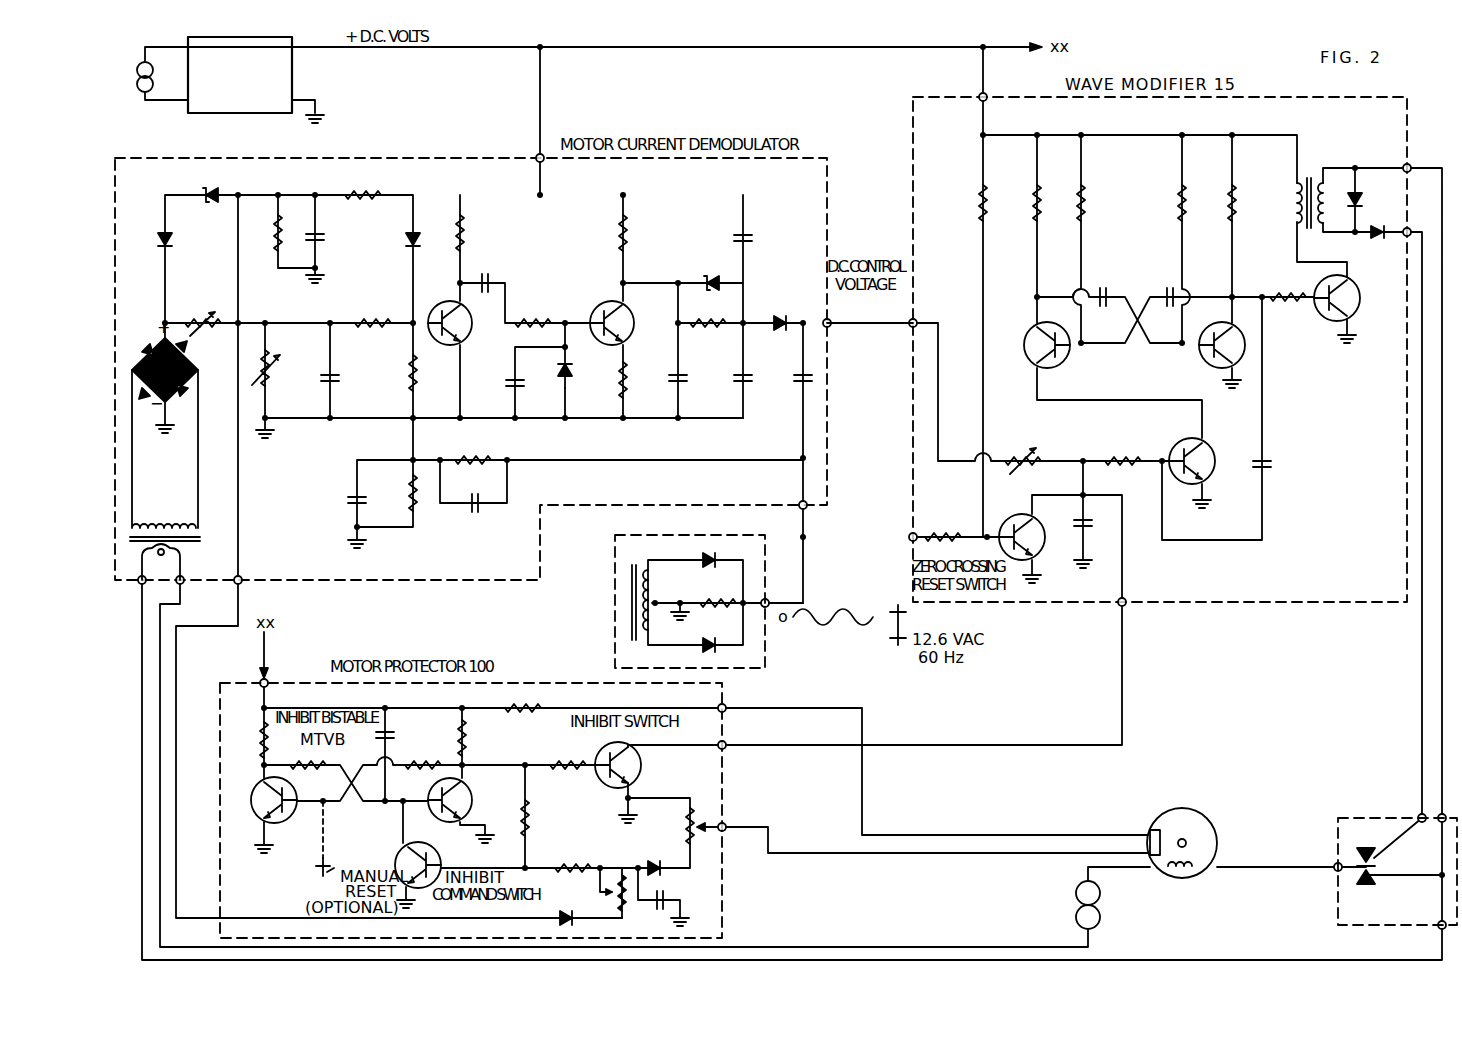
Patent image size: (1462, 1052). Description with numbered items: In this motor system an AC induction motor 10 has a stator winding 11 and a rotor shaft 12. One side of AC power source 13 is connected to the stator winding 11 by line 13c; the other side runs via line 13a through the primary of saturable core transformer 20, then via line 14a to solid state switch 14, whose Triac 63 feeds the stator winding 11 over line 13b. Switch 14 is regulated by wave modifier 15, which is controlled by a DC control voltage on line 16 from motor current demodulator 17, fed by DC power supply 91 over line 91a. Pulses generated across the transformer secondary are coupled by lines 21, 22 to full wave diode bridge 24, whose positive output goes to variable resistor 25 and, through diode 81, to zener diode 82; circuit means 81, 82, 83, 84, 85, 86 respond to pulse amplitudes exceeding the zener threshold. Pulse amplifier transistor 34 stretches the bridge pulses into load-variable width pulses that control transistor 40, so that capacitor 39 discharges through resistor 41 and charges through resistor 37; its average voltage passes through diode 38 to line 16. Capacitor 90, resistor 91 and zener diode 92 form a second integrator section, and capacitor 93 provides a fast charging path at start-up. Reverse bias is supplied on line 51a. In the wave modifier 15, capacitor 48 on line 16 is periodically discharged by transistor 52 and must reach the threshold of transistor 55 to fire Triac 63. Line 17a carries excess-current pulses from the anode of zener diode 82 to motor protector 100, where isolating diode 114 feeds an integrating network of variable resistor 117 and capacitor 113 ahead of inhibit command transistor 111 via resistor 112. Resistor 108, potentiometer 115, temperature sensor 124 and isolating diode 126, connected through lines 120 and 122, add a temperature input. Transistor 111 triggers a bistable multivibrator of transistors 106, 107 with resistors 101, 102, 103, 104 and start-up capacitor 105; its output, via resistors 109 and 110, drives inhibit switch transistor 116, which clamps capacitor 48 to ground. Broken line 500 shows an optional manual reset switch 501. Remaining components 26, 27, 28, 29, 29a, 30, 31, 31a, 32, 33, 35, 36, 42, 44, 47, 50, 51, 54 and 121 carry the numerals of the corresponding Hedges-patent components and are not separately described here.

The AC induction motor 10 is at (1216, 830).
The stator winding 11 is at (1192, 870).
The rotor shaft 12 is at (1194, 832).
The AC power source 13 is at (138, 78).
The line 13a is at (160, 696).
The line 13b is at (1282, 868).
The line 13c is at (1146, 870).
The solid state switch 14 is at (1338, 836).
The line 14a is at (145, 666).
The wave modifier 15 is at (1258, 96).
The line 16 is at (856, 322).
The motor current demodulator 17 is at (465, 157).
The line 17a is at (238, 285).
The saturable core transformer 20 is at (194, 540).
The line 21 is at (134, 476).
The line 22 is at (196, 476).
The full wave diode bridge 24 is at (165, 381).
The variable resistor 25 is at (210, 318).
The variable resistor 26 is at (288, 372).
The capacitor 27 is at (336, 384).
The resistor 28 is at (372, 318).
The resistor 29 is at (405, 498).
The capacitor 29a is at (348, 500).
The resistor 30 is at (409, 378).
The resistor 31 is at (470, 455).
The capacitor 31a is at (466, 492).
The resistor 32 is at (465, 240).
The capacitor 33 is at (488, 278).
The pulse amplifier transistor 34 is at (462, 338).
The resistor 35 is at (520, 318).
The zener diode 36 is at (564, 384).
The resistor 37 is at (619, 236).
The diode 38 is at (780, 316).
The capacitor 39 is at (669, 384).
The signal-biased DC amplifier transistor 40 is at (635, 325).
The resistor 41 is at (619, 384).
The capacitor 42 is at (796, 384).
The capacitor 44 is at (506, 386).
The variable resistor 47 is at (1024, 450).
The capacitor 48 is at (1092, 524).
The transformer 50 is at (645, 566).
The diode 51 is at (706, 565).
The line 51a is at (803, 568).
The transistor 52 is at (1058, 552).
The resistor 54 is at (1128, 452).
The transistor 55 is at (1214, 450).
The Triac 63 is at (1366, 886).
The diode 81 is at (172, 240).
The zener diode 82 is at (206, 188).
The capacitor 83 is at (322, 242).
The resistor 84 is at (274, 236).
The resistor 85 is at (346, 194).
The circuit means 86 is at (405, 244).
The capacitor 90 is at (734, 384).
The DC power supply / resistor 91 is at (305, 70).
The line 91a is at (548, 47).
The zener diode 92 is at (710, 275).
The capacitor 93 is at (734, 238).
The motor protector 100 is at (471, 810).
The resistor 101 is at (258, 740).
The resistor 102 is at (466, 740).
The resistor 103 is at (306, 772).
The resistor 104 is at (420, 762).
The capacitor 105 is at (394, 736).
The transistor 106 is at (250, 806).
The transistor 107 is at (472, 796).
The current limiter resistor 108 is at (525, 705).
The resistor 109 is at (574, 762).
The resistor 110 is at (530, 826).
The inhibit command switch transistor 111 is at (432, 856).
The resistor 112 is at (572, 866).
The capacitor 113 is at (664, 896).
The isolating diode 114 is at (568, 910).
The potentiometer 115 is at (698, 808).
The inhibit switch transistor 116 is at (636, 776).
The variable resistor 117 is at (618, 896).
The line 120 is at (984, 834).
The line 121 is at (1122, 714).
The line 122 is at (988, 854).
The temperature sensor 124 is at (1156, 830).
The isolating diode 126 is at (656, 862).
The broken line 500 is at (324, 834).
The manual reset switch 501 is at (322, 878).